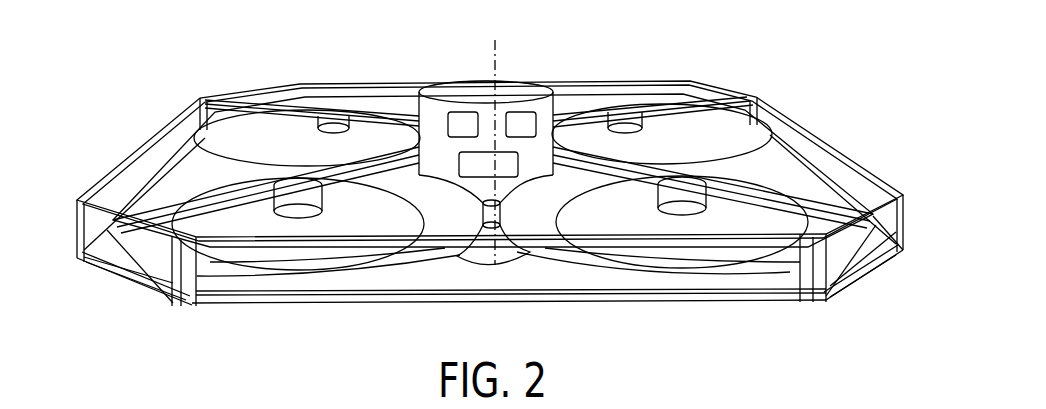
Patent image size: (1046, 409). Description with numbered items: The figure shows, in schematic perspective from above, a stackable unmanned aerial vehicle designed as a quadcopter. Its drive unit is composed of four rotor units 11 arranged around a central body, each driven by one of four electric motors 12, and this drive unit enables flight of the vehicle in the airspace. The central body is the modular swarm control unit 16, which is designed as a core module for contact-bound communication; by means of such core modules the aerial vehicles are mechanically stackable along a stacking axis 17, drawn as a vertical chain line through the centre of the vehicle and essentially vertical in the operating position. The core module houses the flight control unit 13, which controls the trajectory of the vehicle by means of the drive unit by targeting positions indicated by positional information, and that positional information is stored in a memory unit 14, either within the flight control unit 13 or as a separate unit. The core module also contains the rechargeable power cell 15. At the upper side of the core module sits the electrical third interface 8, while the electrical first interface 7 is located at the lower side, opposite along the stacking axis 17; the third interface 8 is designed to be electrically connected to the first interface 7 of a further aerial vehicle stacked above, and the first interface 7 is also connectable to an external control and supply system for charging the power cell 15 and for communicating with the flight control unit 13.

The first interface 7 is at (522, 264).
The third interface 8 is at (468, 88).
The rotor units 11 is at (784, 188).
The electric motors 12 is at (303, 205).
The flight control unit 13 is at (455, 117).
The memory unit 14 is at (530, 117).
The power cell 15 is at (473, 165).
The swarm control unit 16 is at (507, 95).
The stacking axis 17 is at (493, 60).